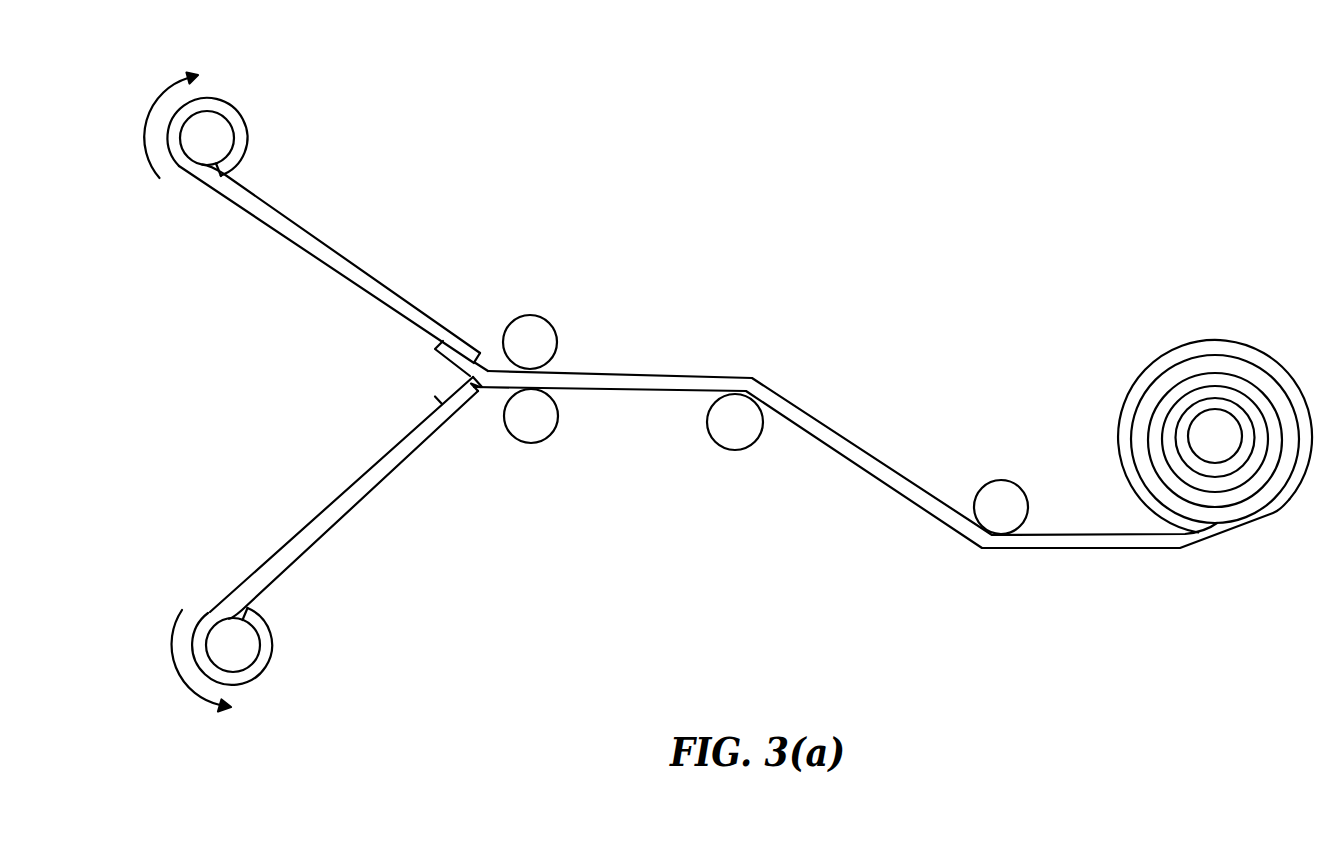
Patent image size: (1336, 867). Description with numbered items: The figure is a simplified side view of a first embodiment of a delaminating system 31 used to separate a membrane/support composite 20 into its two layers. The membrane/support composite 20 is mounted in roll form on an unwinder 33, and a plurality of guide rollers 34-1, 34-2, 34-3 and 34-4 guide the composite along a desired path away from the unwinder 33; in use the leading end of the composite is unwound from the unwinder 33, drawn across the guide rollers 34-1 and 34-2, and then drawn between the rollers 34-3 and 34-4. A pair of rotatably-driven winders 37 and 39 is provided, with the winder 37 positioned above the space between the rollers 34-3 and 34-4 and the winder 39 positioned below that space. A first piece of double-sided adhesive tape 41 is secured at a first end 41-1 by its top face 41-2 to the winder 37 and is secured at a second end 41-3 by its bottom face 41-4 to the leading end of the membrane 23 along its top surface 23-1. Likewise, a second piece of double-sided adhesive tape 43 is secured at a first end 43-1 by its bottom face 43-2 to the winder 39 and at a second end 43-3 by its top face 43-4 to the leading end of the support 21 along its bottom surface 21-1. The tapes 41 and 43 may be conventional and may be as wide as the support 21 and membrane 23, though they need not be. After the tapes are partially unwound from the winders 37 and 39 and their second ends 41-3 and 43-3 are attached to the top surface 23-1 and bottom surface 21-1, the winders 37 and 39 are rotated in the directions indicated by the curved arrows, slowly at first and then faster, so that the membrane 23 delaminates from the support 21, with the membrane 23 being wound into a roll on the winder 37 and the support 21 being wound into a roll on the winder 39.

The membrane/support composite 20 is at (1224, 405).
The support 21 is at (439, 401).
The bottom surface 21-1 is at (672, 396).
The membrane 23 is at (437, 345).
The top surface 23-1 is at (641, 370).
The delaminating system 31 is at (881, 346).
The unwinder 33 is at (1212, 432).
The guide roller 34-1 is at (1006, 504).
The guide roller 34-2 is at (745, 438).
The guide roller 34-3 is at (538, 338).
The guide roller 34-4 is at (540, 430).
The winder 37 is at (212, 130).
The winder 39 is at (243, 662).
The first piece of double-sided adhesive tape 41 is at (340, 234).
The first end 41-1 is at (222, 176).
The top face 41-2 is at (316, 241).
The second end 41-3 is at (485, 348).
The bottom face 41-4 is at (343, 288).
The second piece of double-sided adhesive tape 43 is at (350, 531).
The first end 43-1 is at (248, 614).
The bottom face 43-2 is at (343, 540).
The second end 43-3 is at (484, 418).
The top face 43-4 is at (343, 500).